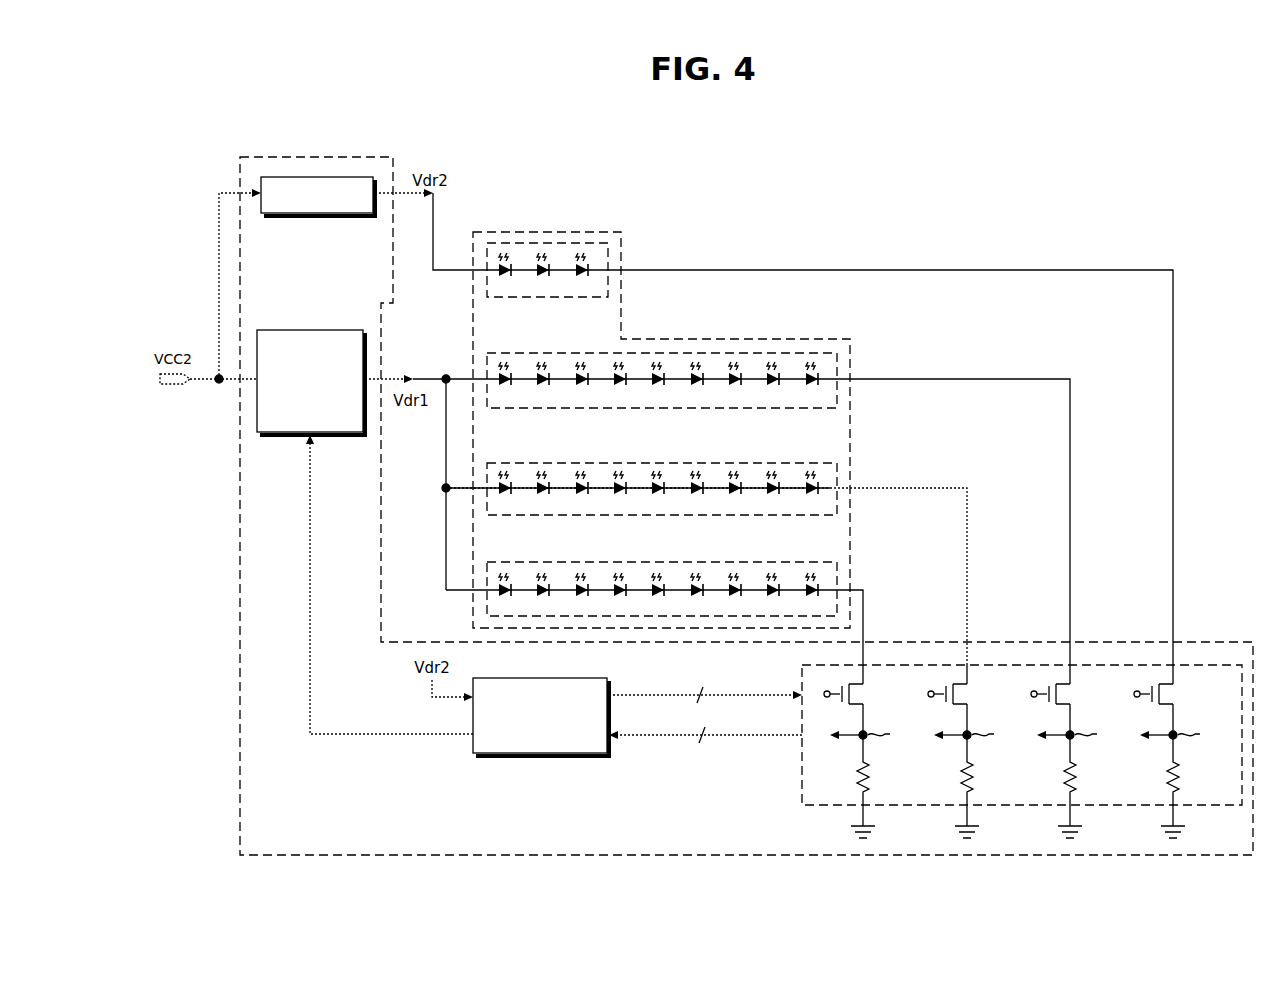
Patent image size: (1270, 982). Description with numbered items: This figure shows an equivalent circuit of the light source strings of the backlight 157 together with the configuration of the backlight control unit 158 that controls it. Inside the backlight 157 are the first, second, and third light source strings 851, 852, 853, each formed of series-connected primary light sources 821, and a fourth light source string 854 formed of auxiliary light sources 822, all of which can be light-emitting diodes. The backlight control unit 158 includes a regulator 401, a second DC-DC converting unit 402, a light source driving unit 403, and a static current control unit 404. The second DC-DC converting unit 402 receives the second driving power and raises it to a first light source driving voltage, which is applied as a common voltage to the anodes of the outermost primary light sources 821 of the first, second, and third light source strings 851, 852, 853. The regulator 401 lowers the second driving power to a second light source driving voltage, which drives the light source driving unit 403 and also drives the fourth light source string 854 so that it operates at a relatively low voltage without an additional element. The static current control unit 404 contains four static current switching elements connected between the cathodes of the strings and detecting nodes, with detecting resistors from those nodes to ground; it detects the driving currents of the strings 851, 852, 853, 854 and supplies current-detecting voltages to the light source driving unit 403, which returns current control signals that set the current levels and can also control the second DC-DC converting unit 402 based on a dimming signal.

The backlight 157 is at (852, 357).
The backlight control unit 158 is at (240, 630).
The regulator 401 is at (313, 216).
The second DC-DC converting unit 402 is at (334, 437).
The light source driving unit 403 is at (537, 758).
The static current control unit 404 is at (802, 772).
The first light source string 851 is at (503, 562).
The second light source string 852 is at (503, 463).
The third light source string 853 is at (503, 353).
The fourth light source string 854 is at (547, 243).
The primary light source 821 is at (813, 388).
The auxiliary light source 822 is at (582, 278).